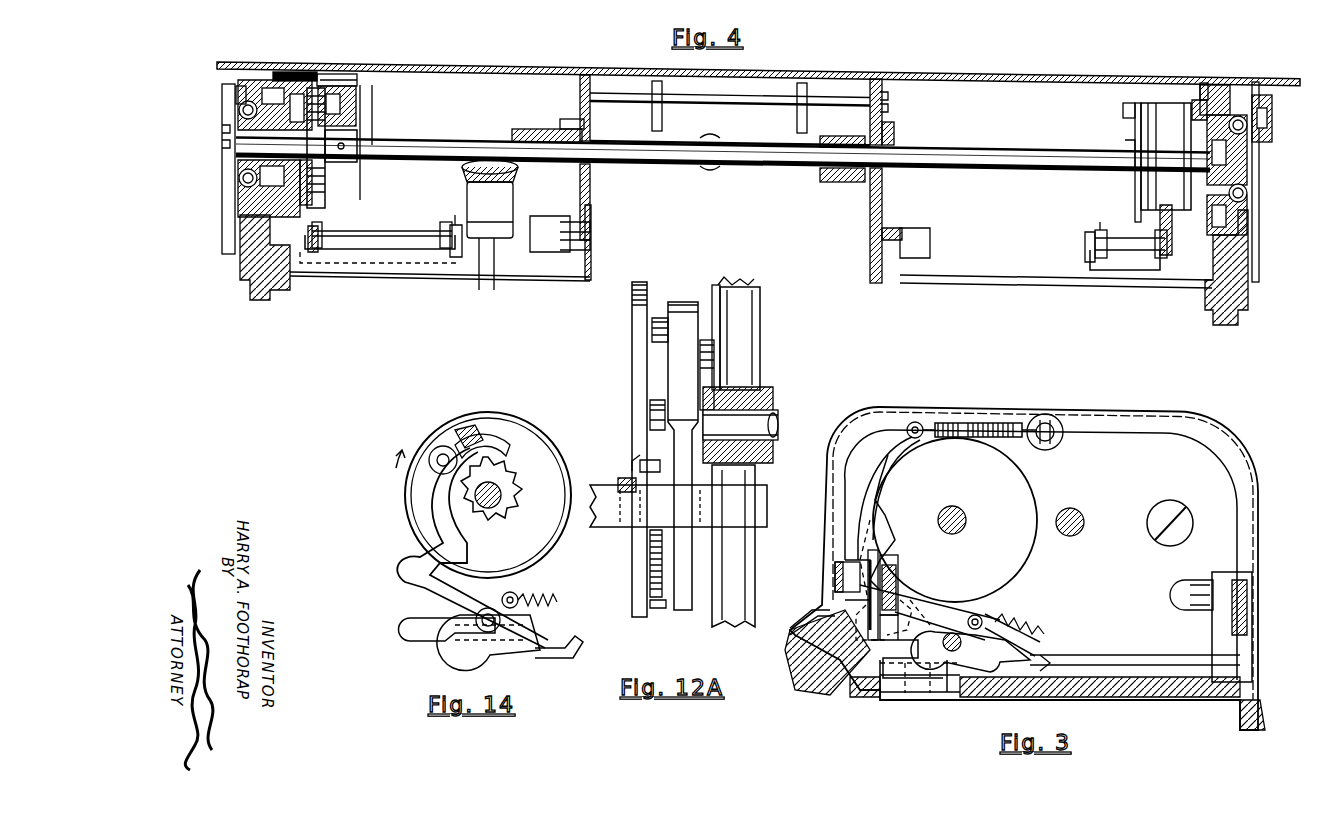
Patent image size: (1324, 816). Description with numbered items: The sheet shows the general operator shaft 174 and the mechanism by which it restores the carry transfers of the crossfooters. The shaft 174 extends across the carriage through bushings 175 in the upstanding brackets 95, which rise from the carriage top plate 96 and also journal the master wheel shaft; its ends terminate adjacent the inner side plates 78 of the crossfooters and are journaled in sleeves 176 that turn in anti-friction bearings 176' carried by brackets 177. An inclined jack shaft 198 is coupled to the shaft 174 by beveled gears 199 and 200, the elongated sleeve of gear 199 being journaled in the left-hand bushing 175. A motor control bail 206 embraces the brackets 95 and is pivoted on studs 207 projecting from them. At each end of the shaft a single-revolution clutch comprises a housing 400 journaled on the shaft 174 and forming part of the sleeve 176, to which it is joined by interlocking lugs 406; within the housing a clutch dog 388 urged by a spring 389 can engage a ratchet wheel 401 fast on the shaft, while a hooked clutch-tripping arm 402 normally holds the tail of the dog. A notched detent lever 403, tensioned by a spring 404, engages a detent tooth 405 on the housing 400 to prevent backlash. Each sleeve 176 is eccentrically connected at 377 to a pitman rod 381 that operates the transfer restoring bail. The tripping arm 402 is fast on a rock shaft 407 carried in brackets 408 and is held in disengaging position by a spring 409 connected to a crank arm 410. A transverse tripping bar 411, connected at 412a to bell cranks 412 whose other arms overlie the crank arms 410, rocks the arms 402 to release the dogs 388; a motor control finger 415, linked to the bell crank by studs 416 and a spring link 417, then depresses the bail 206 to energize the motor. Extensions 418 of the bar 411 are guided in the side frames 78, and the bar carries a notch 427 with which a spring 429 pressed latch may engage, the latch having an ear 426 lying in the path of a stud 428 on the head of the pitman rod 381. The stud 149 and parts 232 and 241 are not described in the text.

In FIG. 12A, the side plate 78 is at (632, 303).
In FIG. 4, the bracket 95 is at (590, 76).
In FIG. 4, the carriage top plate 96 is at (284, 280).
In FIG. 3, the carriage top plate 96 is at (808, 640).
In FIG. 3, the stud 149 is at (1080, 512).
In FIG. 4, the general operator shaft 174 is at (418, 141).
In FIG. 14, the general operator shaft 174 is at (545, 470).
In FIG. 12A, the general operator shaft 174 is at (755, 425).
In FIG. 3, the general operator shaft 174 is at (955, 512).
In FIG. 4, the bushing 175 is at (562, 119).
In FIG. 4, the sleeve 176 is at (744, 137).
In FIG. 12A, the sleeve 176 is at (759, 375).
In FIG. 4, the anti-friction bearing 176' is at (745, 197).
In FIG. 12A, the anti-friction bearing 176' is at (724, 322).
In FIG. 4, the bracket 177 is at (248, 256).
In FIG. 12A, the bracket 177 is at (760, 322).
In FIG. 4, the jack shaft 198 is at (486, 292).
In FIG. 4, the beveled gear 199 is at (462, 170).
In FIG. 4, the beveled gear 200 is at (518, 129).
In FIG. 4, the motor control bail 206 is at (548, 255).
In FIG. 4, the stud 207 is at (591, 212).
In FIG. 4, the collar 232 is at (843, 182).
In FIG. 4, the motor 241 is at (470, 195).
In FIG. 4, the eccentric connection 377 is at (236, 100).
In FIG. 12A, the eccentric connection 377 is at (660, 345).
In FIG. 4, the pitman rod 381 is at (222, 218).
In FIG. 12A, the pitman rod 381 is at (690, 610).
In FIG. 4, the clutch dog 388 is at (328, 65).
In FIG. 14, the clutch dog 388 is at (516, 448).
In FIG. 14, the spring 389 is at (455, 440).
In FIG. 4, the housing 400 is at (330, 95).
In FIG. 14, the housing 400 is at (512, 428).
In FIG. 3, the housing 400 is at (1035, 486).
In FIG. 4, the ratchet wheel 401 is at (340, 165).
In FIG. 14, the ratchet wheel 401 is at (491, 507).
In FIG. 4, the clutch-tripping arm 402 is at (318, 252).
In FIG. 14, the clutch-tripping arm 402 is at (412, 580).
In FIG. 3, the clutch-tripping arm 402 is at (975, 615).
In FIG. 3, the detent lever 403 is at (860, 484).
In FIG. 3, the spring 404 is at (968, 423).
In FIG. 3, the detent tooth 405 is at (868, 519).
In FIG. 4, the interlocking lug 406 is at (292, 56).
In FIG. 4, the rock shaft 407 is at (414, 228).
In FIG. 14, the rock shaft 407 is at (470, 648).
In FIG. 3, the rock shaft 407 is at (998, 628).
In FIG. 4, the bracket 408 is at (408, 251).
In FIG. 14, the bracket 408 is at (572, 645).
In FIG. 3, the bracket 408 is at (1080, 655).
In FIG. 14, the spring 409 is at (560, 582).
In FIG. 3, the spring 409 is at (1040, 645).
In FIG. 4, the crank arm 410 is at (452, 250).
In FIG. 14, the crank arm 410 is at (410, 627).
In FIG. 3, the crank arm 410 is at (905, 660).
In FIG. 3, the tripping bar 411 is at (835, 575).
In FIG. 3, the bell crank 412 is at (900, 610).
In FIG. 3, the connection 412a is at (858, 570).
In FIG. 3, the motor control finger 415 is at (880, 560).
In FIG. 3, the stud 416 is at (895, 575).
In FIG. 3, the spring link 417 is at (830, 608).
In FIG. 12A, the extension 418 is at (705, 545).
In FIG. 12A, the lateral ear 426 is at (660, 460).
In FIG. 12A, the notch 427 is at (628, 525).
In FIG. 4, the stud 428 is at (222, 130).
In FIG. 12A, the stud 428 is at (660, 405).
In FIG. 12A, the spring 429 is at (656, 605).